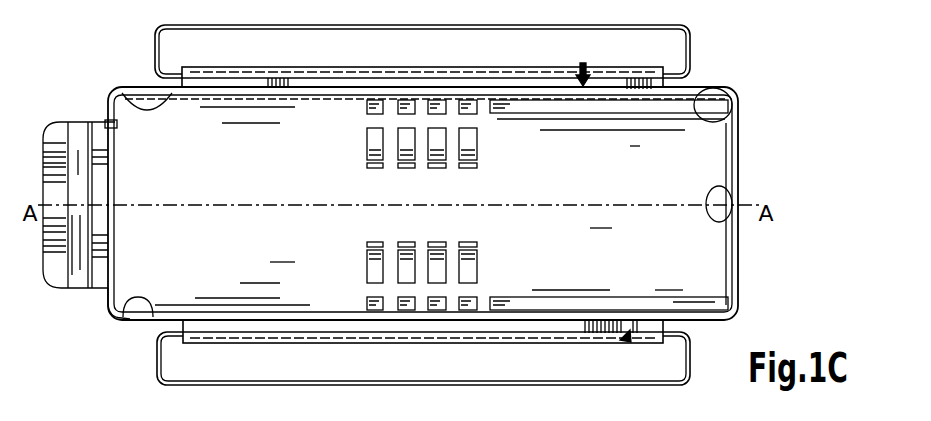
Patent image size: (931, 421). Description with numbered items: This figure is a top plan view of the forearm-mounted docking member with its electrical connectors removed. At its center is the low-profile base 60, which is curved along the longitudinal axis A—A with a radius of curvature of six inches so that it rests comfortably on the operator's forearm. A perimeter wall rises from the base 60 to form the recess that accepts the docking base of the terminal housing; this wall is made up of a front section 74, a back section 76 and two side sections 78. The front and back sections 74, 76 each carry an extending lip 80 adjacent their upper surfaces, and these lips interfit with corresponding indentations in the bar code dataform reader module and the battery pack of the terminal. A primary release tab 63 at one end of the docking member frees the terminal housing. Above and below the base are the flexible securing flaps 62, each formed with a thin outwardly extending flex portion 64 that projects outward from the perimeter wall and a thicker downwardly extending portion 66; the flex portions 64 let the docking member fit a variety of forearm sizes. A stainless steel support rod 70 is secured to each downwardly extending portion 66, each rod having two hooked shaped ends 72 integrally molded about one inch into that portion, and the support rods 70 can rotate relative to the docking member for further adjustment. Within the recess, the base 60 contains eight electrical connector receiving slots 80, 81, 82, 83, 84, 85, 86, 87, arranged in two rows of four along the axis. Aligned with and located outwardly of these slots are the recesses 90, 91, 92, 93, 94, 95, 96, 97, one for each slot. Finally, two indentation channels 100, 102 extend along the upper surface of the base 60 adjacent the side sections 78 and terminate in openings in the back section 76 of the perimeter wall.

The base 60 is at (277, 196).
The flexible securing flap 62 is at (583, 63).
The primary release tab 63 is at (53, 136).
The outwardly extending flex portion 64 is at (297, 86).
The downwardly extending portion 66 is at (315, 75).
The support rod 70 is at (573, 27).
The hooked shaped end 72 is at (153, 42).
The front section 74 is at (107, 310).
The back section 76 is at (713, 87).
The side section 78 is at (120, 94).
The extending lip 80 is at (373, 270).
The electrical connector receiving slot 81 is at (403, 267).
The electrical connector receiving slot 82 is at (436, 271).
The electrical connector receiving slot 83 is at (470, 272).
The electrical connector receiving slot 84 is at (470, 140).
The electrical connector receiving slot 85 is at (437, 143).
The electrical connector receiving slot 86 is at (403, 143).
The electrical connector receiving slot 87 is at (375, 142).
The recess 90 is at (368, 303).
The recess 91 is at (403, 312).
The recess 92 is at (436, 312).
The recess 93 is at (466, 308).
The recess 94 is at (467, 104).
The recess 95 is at (438, 104).
The recess 96 is at (405, 104).
The recess 97 is at (367, 103).
The indentation channel 100 is at (580, 300).
The indentation channel 102 is at (653, 107).